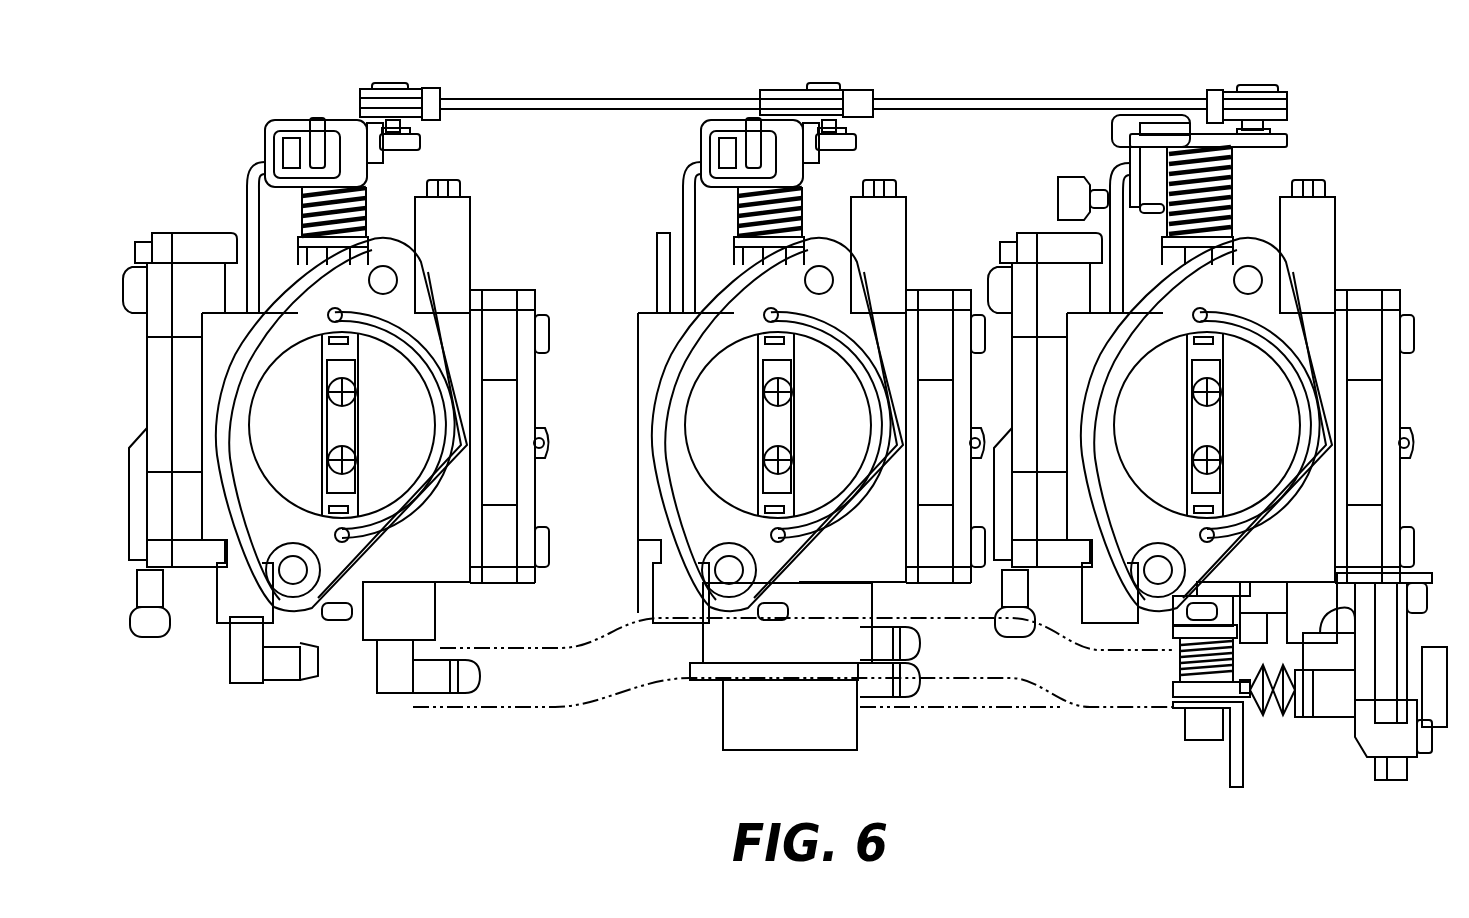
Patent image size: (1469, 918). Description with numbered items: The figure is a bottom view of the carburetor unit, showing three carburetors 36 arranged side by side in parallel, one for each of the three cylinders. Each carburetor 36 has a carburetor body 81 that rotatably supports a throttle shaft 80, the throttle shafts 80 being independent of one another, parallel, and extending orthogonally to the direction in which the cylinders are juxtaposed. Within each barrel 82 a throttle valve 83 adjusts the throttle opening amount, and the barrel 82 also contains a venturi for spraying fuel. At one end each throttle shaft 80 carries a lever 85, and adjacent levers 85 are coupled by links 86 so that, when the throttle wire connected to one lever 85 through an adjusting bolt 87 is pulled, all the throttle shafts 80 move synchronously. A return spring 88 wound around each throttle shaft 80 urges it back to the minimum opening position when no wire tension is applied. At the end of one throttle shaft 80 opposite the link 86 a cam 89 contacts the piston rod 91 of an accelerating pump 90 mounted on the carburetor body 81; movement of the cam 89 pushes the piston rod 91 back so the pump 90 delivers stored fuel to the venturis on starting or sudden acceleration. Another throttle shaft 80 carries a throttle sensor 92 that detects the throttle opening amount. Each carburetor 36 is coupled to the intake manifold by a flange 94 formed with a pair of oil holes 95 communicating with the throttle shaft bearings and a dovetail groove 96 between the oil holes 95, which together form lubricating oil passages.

The carburetor 36 is at (508, 290).
The throttle shaft 80 is at (317, 350).
The carburetor body 81 is at (452, 585).
The barrel 82 is at (272, 484).
The throttle valve 83 is at (360, 422).
The lever 85 is at (420, 141).
The link 86 is at (578, 97).
The adjusting bolt 87 is at (1062, 180).
The return spring 88 is at (367, 212).
The cam 89 is at (1173, 688).
The accelerating pump 90 is at (1455, 728).
The piston rod 91 is at (1253, 712).
The throttle sensor 92 is at (760, 752).
The flange 94 is at (422, 302).
The oil hole 95 is at (328, 315).
The dovetail groove 96 is at (432, 477).